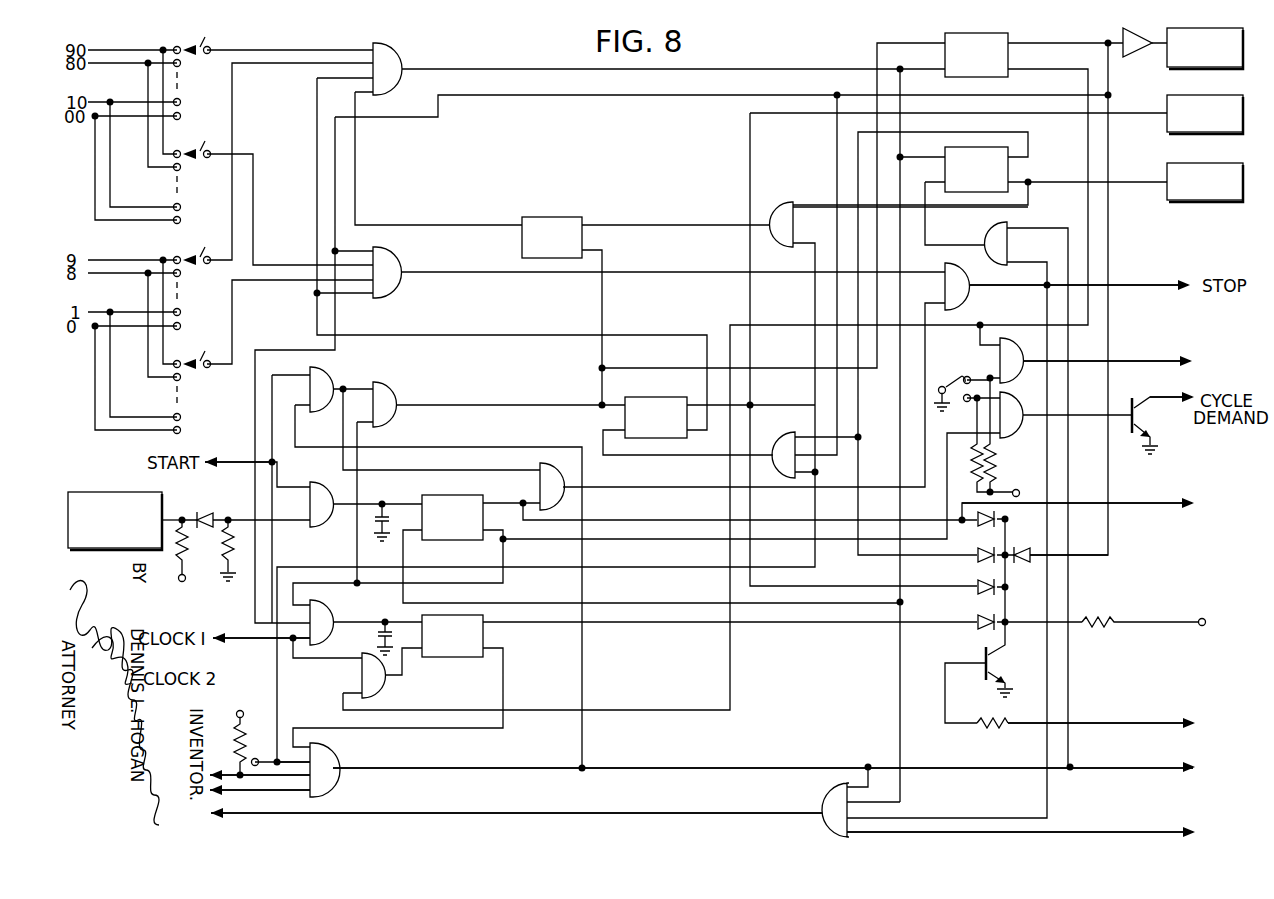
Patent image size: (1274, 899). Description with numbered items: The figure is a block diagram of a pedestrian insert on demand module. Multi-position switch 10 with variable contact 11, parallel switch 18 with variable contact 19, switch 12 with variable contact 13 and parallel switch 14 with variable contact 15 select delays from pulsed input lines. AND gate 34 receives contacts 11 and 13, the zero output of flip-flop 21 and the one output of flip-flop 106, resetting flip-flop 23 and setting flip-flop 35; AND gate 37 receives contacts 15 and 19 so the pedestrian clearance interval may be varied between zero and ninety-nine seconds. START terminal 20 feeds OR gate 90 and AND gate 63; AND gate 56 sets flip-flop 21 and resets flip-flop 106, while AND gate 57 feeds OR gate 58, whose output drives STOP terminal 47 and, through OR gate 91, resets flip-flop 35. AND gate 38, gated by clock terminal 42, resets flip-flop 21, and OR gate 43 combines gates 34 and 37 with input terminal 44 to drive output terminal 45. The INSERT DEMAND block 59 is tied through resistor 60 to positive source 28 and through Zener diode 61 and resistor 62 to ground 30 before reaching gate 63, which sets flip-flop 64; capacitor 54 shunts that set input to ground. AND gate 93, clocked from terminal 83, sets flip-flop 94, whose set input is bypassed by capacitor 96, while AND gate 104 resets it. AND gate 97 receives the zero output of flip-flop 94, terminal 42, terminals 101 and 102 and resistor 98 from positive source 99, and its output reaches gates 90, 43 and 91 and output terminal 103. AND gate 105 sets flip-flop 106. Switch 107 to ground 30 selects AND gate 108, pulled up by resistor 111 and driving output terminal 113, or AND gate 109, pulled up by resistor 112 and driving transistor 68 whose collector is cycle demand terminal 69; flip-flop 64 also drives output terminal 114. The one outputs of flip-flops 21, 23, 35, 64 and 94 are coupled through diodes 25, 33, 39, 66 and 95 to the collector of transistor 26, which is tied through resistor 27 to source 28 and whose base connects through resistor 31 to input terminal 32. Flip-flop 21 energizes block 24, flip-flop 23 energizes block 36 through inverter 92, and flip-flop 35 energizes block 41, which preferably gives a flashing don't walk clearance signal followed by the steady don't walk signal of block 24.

The first multi-position switch 10 is at (219, 93).
The variable contact 11 is at (201, 35).
The switch 18 is at (221, 196).
The variable contact 19 is at (201, 140).
The second multiposition switch 12 is at (221, 303).
The variable contact 13 is at (201, 246).
The third multiposition switch 14 is at (221, 408).
The variable contact 15 is at (201, 350).
The AND gate 34 is at (395, 58).
The AND gate 37 is at (395, 260).
The OR gate 90 is at (322, 384).
The AND gate 56 is at (388, 398).
The AND gate 63 is at (323, 476).
The AND gate 57 is at (558, 476).
The AND gate 93 is at (328, 614).
The AND gate 104 is at (362, 675).
The AND gate 97 is at (328, 756).
The AND gate 105 is at (780, 203).
The AND gate 38 is at (781, 436).
The OR gate 43 is at (828, 795).
The OR gate 91 is at (1007, 243).
The OR gate 58 is at (945, 285).
The AND gate 108 is at (1018, 354).
The AND gate 109 is at (1017, 408).
The flip-flop 106 is at (564, 247).
The flip-flop 21 is at (666, 427).
The flip-flop 64 is at (462, 526).
The flip-flop 94 is at (462, 645).
The flip-flop 23 is at (986, 64).
The flip-flop 35 is at (986, 178).
The block labeled GATE 1 36 is at (1243, 33).
The block labeled GATE 3 24 is at (1238, 95).
The block labeled GATE 2 41 is at (1236, 165).
The inverter 92 is at (1146, 51).
The block labeled INSERT DEMAND 59 is at (110, 492).
The Zener diode 61 is at (207, 512).
The resistor 60 is at (170, 551).
The resistor 62 is at (214, 546).
The source of positive energizing potential 28 is at (179, 584).
The ground 30 is at (1163, 448).
The capacitor 54 is at (386, 519).
The capacitor 96 is at (387, 633).
The input terminal labeled START 20 is at (206, 462).
The terminal 83 is at (226, 641).
The input terminal labeled CLOCK 2 42 is at (256, 757).
The positive source of energizing potential 99 is at (236, 715).
The resistor 98 is at (227, 744).
The input terminal 101 is at (212, 772).
The input terminal 102 is at (220, 792).
The output terminal 45 is at (216, 816).
The output terminal labeled STOP 47 is at (1190, 283).
The output terminal 113 is at (1190, 362).
The cycle demand output terminal 69 is at (1193, 396).
The output terminal 114 is at (1192, 506).
The input terminal 32 is at (1194, 722).
The output terminal 103 is at (1193, 766).
The input terminal 44 is at (1194, 829).
The switch 107 is at (963, 375).
The resistor 111 is at (996, 462).
The resistor 112 is at (977, 478).
The diode 66 is at (996, 519).
The diode 39 is at (978, 550).
The diode 33 is at (1028, 544).
The diode 25 is at (980, 584).
The diode 95 is at (976, 616).
The resistor 27 is at (1106, 620).
The transistor 68 is at (1173, 425).
The transistor 26 is at (1022, 670).
The resistor 31 is at (995, 735).